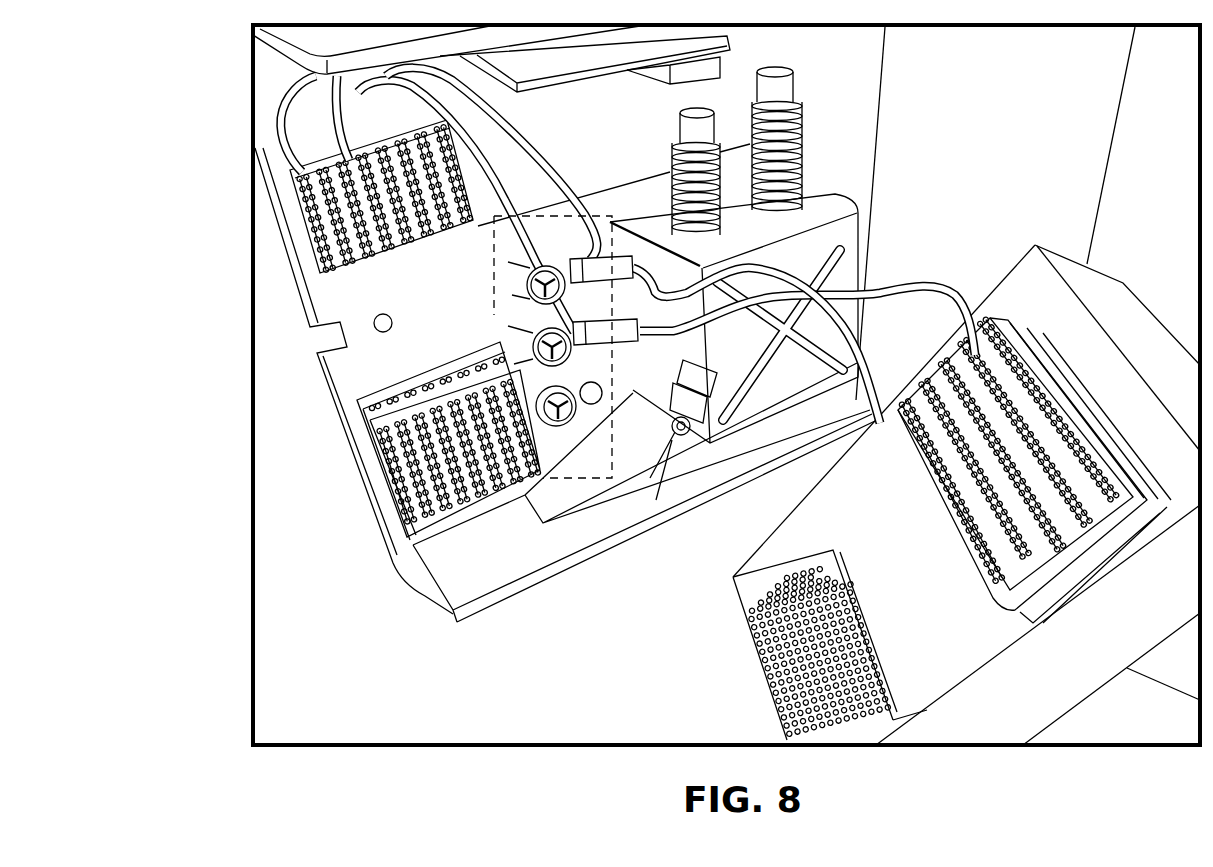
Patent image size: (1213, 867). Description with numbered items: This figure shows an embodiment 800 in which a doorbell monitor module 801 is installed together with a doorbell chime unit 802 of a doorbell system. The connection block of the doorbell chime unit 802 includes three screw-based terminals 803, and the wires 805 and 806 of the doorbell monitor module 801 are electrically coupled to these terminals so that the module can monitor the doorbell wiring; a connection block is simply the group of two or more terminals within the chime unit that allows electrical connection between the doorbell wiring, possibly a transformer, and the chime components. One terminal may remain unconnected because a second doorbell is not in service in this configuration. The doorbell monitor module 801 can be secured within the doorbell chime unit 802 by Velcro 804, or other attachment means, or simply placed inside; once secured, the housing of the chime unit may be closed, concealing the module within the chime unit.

The embodiment 800 is at (184, 744).
The doorbell monitor module 801 is at (1161, 605).
The doorbell chime unit 802 is at (646, 150).
The screw-based terminals 803 is at (512, 215).
The Velcro 804 is at (1000, 318).
The wire 805 is at (648, 336).
The wire 806 is at (646, 278).